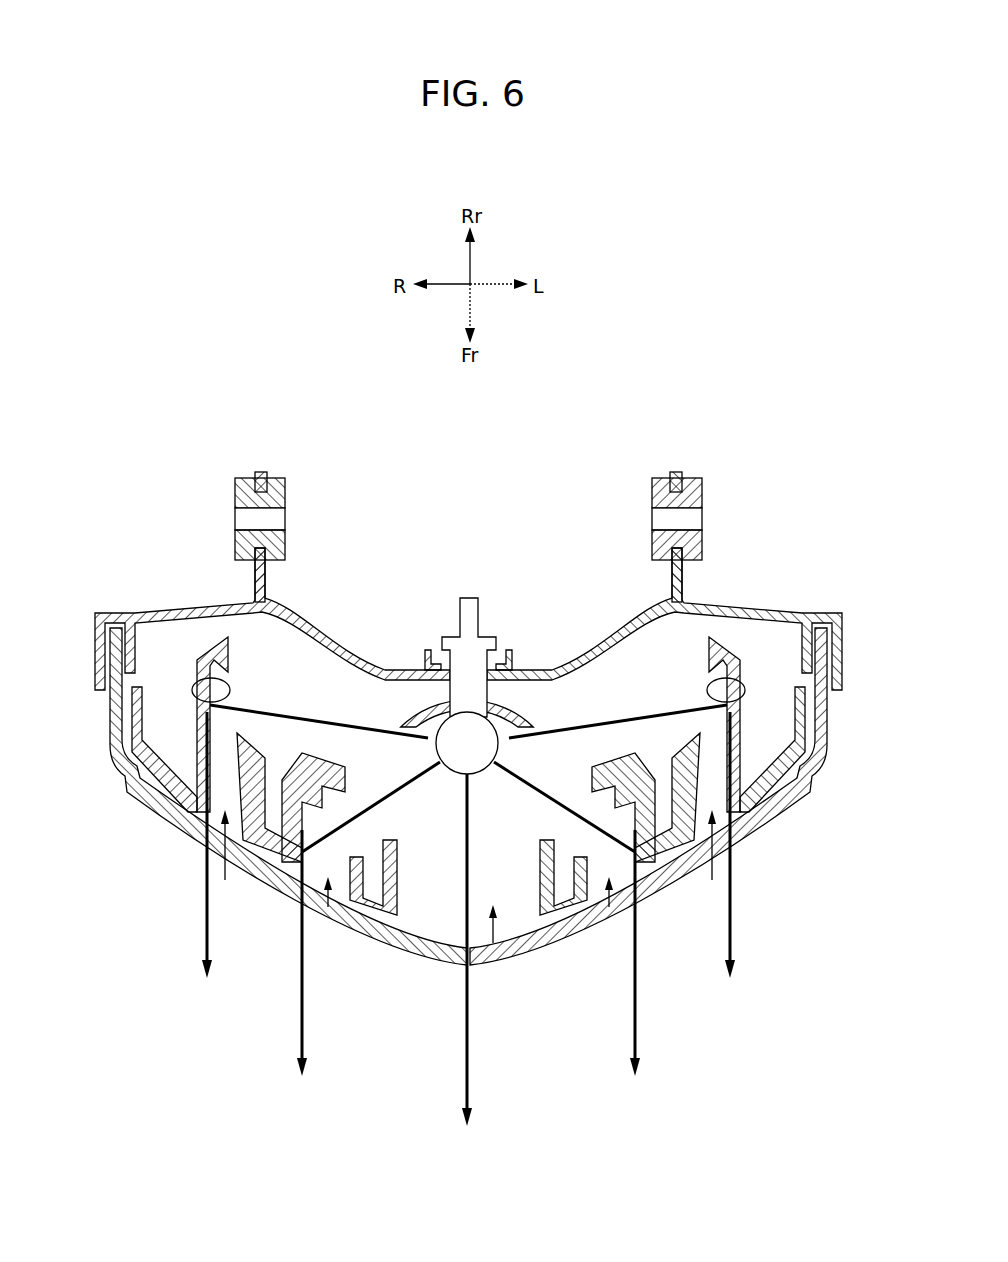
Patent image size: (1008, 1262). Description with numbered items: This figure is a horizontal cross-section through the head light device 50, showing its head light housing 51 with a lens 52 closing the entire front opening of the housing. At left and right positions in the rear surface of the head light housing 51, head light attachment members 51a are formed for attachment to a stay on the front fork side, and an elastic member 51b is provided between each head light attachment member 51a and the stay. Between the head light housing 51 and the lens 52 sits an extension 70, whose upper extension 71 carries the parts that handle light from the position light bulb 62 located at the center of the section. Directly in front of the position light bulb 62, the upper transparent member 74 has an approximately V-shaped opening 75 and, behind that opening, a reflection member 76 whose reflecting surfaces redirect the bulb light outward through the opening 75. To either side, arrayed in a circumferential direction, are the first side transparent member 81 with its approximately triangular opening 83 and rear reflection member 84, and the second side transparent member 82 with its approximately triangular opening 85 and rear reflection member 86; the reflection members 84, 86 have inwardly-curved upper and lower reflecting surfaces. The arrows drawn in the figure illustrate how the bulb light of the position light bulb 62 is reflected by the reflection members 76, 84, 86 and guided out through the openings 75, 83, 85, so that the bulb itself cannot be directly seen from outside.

The head light device 50 is at (505, 525).
The head light housing 51 is at (765, 606).
The head light attachment member 51a is at (262, 474).
The elastic member 51b is at (246, 480).
The lens 52 is at (807, 790).
The position light bulb 62 is at (482, 735).
The extension 70 is at (205, 640).
The upper extension 71 is at (763, 792).
The upper transparent member 74 is at (493, 943).
The opening 75 is at (410, 922).
The reflection member 76 is at (425, 735).
The first side transparent member 81 is at (328, 907).
The second side transparent member 82 is at (207, 855).
The opening 83 is at (347, 914).
The reflection member 84 is at (302, 868).
The opening 85 is at (225, 880).
The reflection member 86 is at (190, 682).